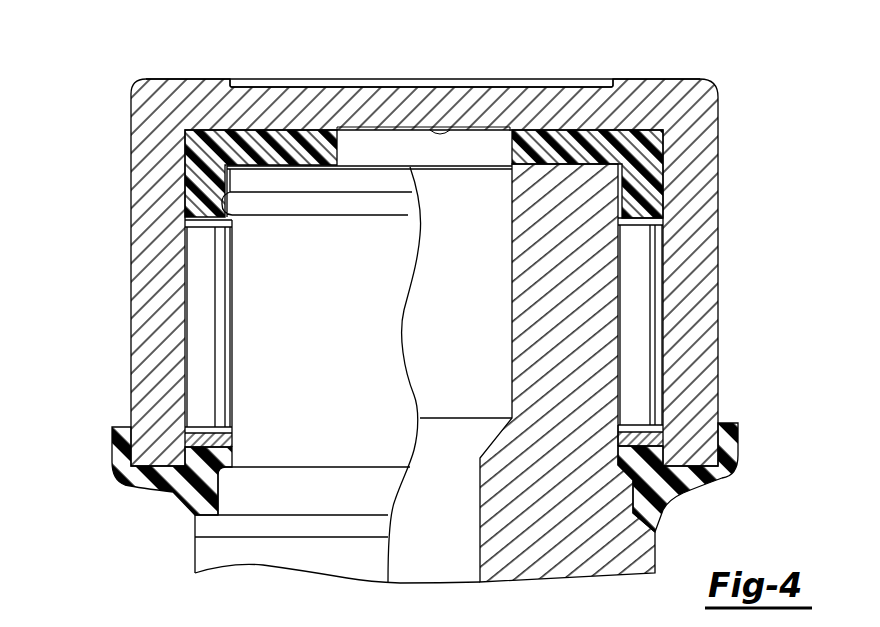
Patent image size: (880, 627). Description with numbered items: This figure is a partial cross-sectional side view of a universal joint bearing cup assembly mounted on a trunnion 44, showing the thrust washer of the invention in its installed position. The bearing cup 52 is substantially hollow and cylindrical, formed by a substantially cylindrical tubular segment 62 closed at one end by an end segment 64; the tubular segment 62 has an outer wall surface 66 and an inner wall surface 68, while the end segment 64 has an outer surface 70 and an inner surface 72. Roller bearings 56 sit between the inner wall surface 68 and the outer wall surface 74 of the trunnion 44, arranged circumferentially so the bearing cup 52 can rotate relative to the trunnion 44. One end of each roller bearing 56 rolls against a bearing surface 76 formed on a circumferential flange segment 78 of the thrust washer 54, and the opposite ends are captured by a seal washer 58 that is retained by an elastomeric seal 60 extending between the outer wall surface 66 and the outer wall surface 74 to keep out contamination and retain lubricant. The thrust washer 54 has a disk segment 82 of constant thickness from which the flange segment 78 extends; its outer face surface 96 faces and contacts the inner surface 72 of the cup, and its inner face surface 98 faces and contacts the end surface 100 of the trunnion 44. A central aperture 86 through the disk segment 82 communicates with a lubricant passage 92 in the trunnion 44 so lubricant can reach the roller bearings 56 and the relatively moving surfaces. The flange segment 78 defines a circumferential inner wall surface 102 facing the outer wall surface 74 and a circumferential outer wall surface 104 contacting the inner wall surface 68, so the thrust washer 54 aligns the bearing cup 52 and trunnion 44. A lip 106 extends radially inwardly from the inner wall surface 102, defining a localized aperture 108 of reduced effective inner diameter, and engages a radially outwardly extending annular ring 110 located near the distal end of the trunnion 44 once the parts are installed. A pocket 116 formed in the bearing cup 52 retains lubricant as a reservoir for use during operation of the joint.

The trunnion 44 is at (624, 388).
The bearing cup 52 is at (130, 80).
The thrust washer 54 is at (183, 174).
The roller bearings 56 is at (183, 310).
The seal washer 58 is at (183, 437).
The elastomeric seal 60 is at (112, 472).
The tubular segment 62 is at (141, 266).
The end segment 64 is at (213, 98).
The outer wall surface 66 is at (131, 222).
The inner wall surface 68 is at (187, 345).
The outer surface 70 is at (165, 79).
The inner surface 72 is at (665, 153).
The outer wall surface 74 is at (228, 367).
The bearing surface 76 is at (637, 219).
The circumferential flange segment 78 is at (653, 193).
The disk segment 82 is at (281, 132).
The central aperture 86 is at (512, 167).
The lubricant passage 92 is at (452, 320).
The outer face surface 96 is at (572, 130).
The inner face surface 98 is at (317, 170).
The end surface 100 is at (340, 146).
The circumferential inner wall surface 102 is at (230, 184).
The circumferential outer wall surface 104 is at (183, 152).
The lip 106 is at (233, 218).
The localized aperture 108 is at (614, 214).
The annular ring 110 is at (373, 202).
The pocket 116 is at (440, 135).